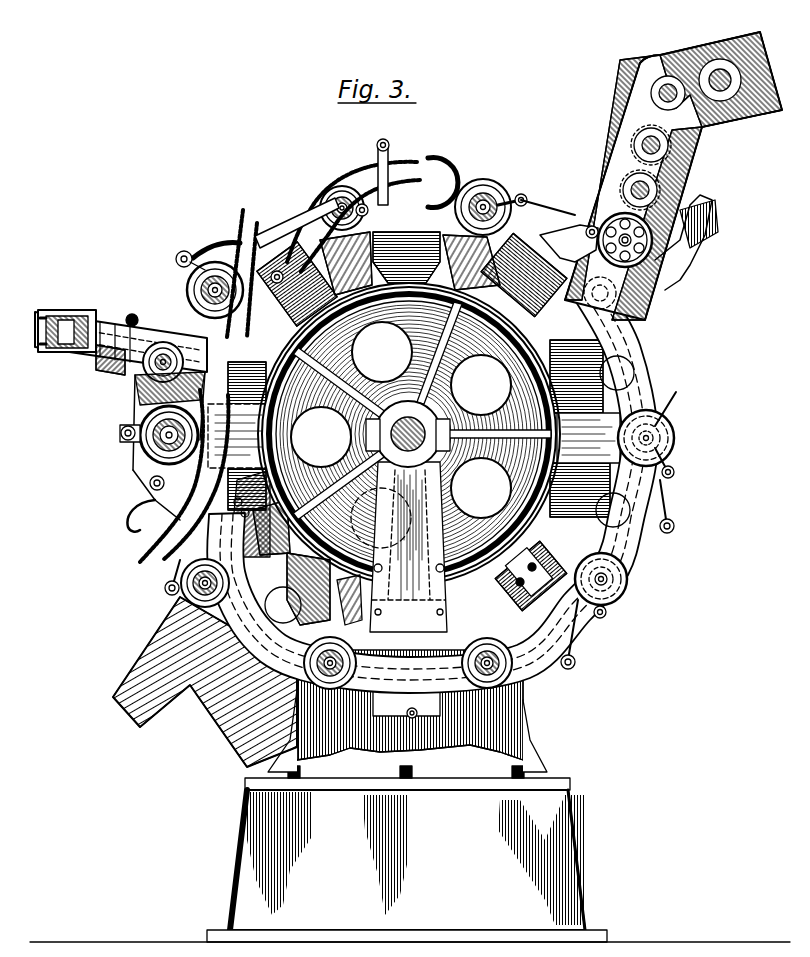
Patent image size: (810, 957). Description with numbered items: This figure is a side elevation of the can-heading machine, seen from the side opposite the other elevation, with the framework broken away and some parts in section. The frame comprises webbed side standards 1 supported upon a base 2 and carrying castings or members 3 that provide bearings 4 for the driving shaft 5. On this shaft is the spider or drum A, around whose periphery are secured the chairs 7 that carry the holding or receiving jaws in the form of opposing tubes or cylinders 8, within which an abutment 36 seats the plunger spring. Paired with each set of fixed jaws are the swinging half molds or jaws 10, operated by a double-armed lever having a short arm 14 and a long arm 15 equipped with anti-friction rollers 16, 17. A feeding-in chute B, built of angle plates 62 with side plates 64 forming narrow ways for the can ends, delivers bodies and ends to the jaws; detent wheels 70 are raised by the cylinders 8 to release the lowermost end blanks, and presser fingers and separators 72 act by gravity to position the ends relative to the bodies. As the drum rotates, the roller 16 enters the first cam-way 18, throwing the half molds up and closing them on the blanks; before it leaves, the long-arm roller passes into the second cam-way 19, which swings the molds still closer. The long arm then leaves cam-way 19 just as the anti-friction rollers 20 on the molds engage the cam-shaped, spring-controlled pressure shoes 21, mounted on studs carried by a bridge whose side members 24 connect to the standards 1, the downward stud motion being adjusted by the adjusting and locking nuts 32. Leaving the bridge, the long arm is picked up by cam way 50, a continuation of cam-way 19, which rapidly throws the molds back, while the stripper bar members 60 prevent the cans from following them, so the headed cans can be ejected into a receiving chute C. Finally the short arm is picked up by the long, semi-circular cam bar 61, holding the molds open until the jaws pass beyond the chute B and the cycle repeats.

The side standards 1 is at (290, 740).
The base 2 is at (540, 856).
The castings or members 3 is at (399, 547).
The bearings 4 is at (450, 396).
The driving shaft 5 is at (417, 440).
The chairs 7 is at (628, 414).
The holding or receiving jaws (tubes or cylinders) 8 is at (498, 204).
The swinging half molds or jaws 10 is at (205, 283).
The short arm 14 is at (372, 165).
The long arm 15 is at (665, 500).
The anti-friction roller 16 is at (674, 471).
The anti-friction roller 17 is at (676, 526).
The first cam-way 18 is at (402, 172).
The second cam-way 19 is at (252, 232).
The anti-friction rollers 20 is at (184, 252).
The pressure shoes 21 is at (128, 315).
The side members of the bridge 24 is at (180, 345).
The adjusting and locking nuts 32 is at (48, 310).
The abutment 36 is at (90, 352).
The cam way 50 is at (178, 520).
The stripper arm or bar members 60 is at (150, 452).
The long cam bar 61 is at (537, 663).
The angle plates 62 is at (752, 46).
The plates 64 is at (638, 100).
The anti-friction rollers or wheels 70 is at (640, 255).
The presser fingers and separators 72 is at (580, 226).
The spider or drum A is at (553, 385).
The feeding-in chute B is at (700, 160).
The receiving chute C is at (202, 682).